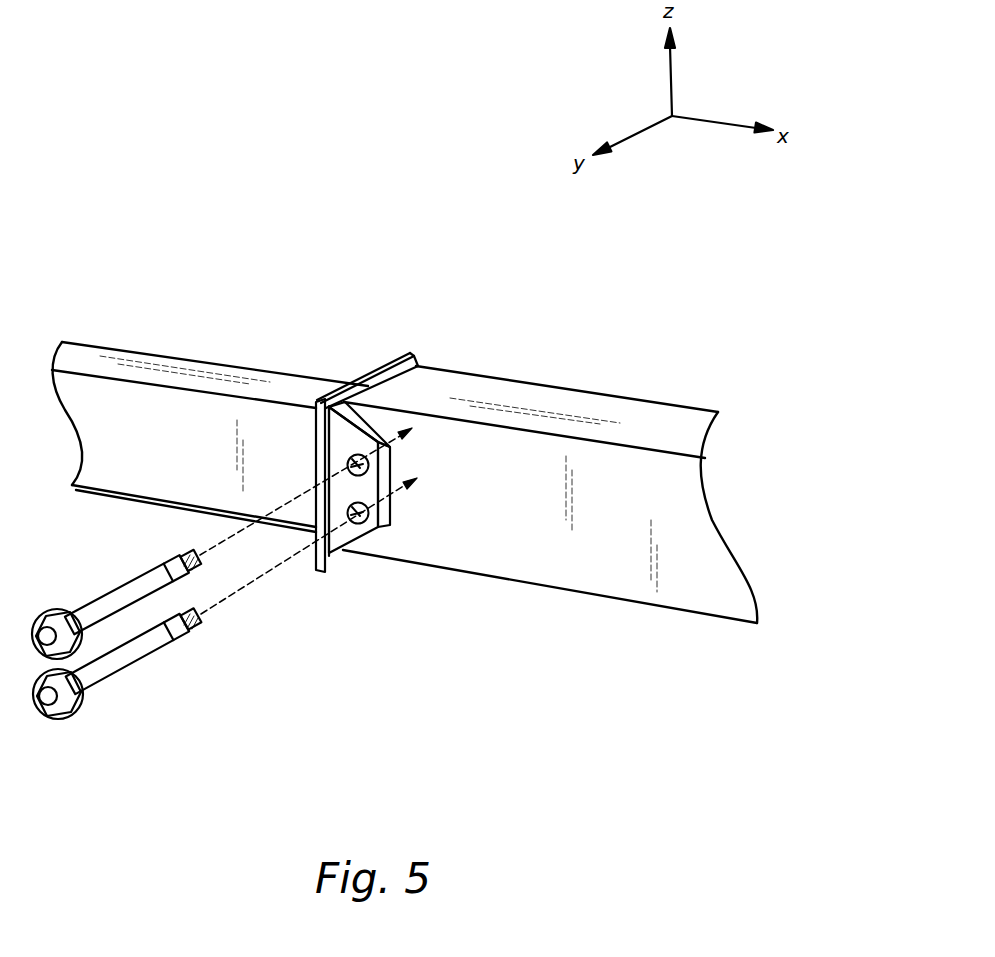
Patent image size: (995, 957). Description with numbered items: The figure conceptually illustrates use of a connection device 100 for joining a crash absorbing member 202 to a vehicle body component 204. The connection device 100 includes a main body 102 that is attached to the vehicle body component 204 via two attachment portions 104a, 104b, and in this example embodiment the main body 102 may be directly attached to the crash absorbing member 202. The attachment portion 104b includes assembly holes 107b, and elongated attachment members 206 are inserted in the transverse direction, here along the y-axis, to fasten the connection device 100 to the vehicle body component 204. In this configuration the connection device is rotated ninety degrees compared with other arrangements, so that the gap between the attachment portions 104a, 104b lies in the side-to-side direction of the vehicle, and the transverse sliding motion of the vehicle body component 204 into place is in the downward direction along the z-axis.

The connection device 100 is at (370, 358).
The main body 102 is at (390, 368).
The attachment portion 104a is at (413, 365).
The attachment portion 104b is at (342, 525).
The assembly holes 107b is at (368, 470).
The crash absorbing member 202 is at (173, 459).
The vehicle body component 204 is at (533, 518).
The elongated attachment members 206 is at (117, 655).